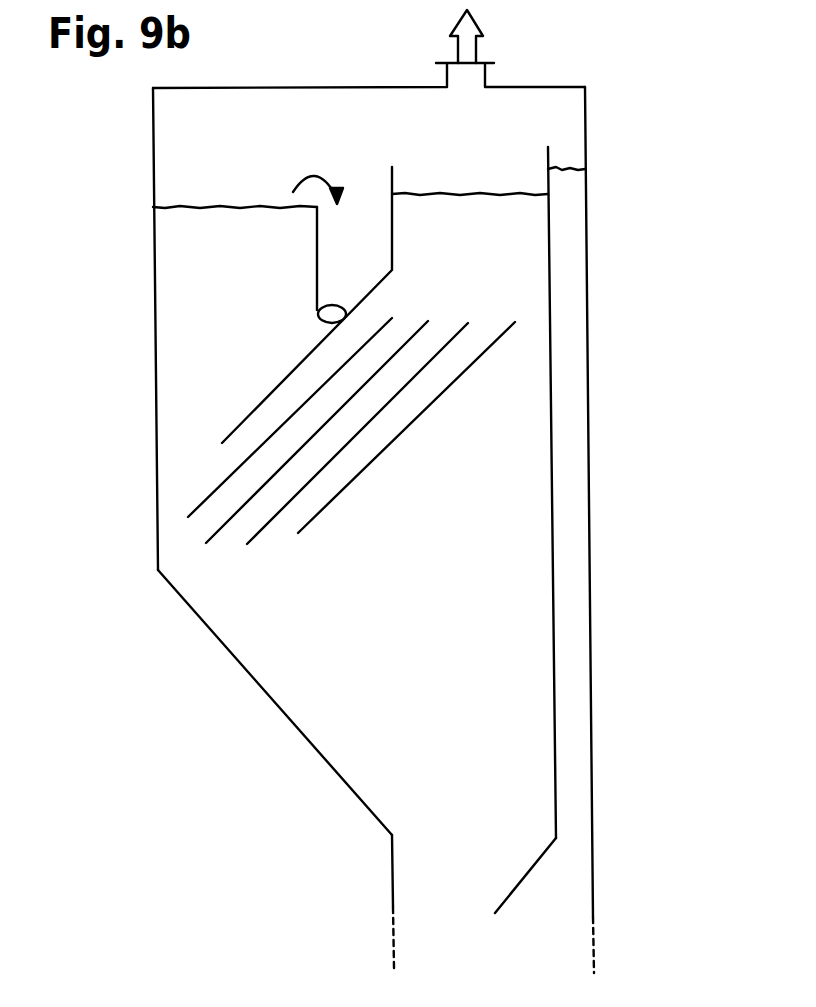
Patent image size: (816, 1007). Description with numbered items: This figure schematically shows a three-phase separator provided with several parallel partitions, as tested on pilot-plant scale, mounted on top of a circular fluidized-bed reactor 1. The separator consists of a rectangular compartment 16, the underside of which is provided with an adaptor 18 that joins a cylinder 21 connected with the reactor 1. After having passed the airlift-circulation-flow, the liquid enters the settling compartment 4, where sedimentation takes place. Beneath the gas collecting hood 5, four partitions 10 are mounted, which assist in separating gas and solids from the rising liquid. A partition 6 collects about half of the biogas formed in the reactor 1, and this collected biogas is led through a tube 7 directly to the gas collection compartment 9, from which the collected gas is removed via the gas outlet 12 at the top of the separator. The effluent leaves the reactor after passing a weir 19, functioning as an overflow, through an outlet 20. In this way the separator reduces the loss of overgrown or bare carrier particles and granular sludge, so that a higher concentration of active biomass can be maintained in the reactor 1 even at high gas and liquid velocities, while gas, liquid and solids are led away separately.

The fluidized-bed reactor 1 is at (390, 950).
The settling compartment 4 is at (235, 258).
The gas collecting hood 5 is at (303, 360).
The partition 6 is at (518, 883).
The tube 7 is at (570, 502).
The gas collection compartment 9 is at (385, 278).
The partitions 10 is at (398, 312).
The gas outlet 12 is at (484, 21).
The rectangular compartment 16 is at (155, 302).
The adaptor 18 is at (282, 713).
The weir 19 is at (317, 203).
The outlets 20 is at (332, 303).
The cylinder 21 is at (392, 878).